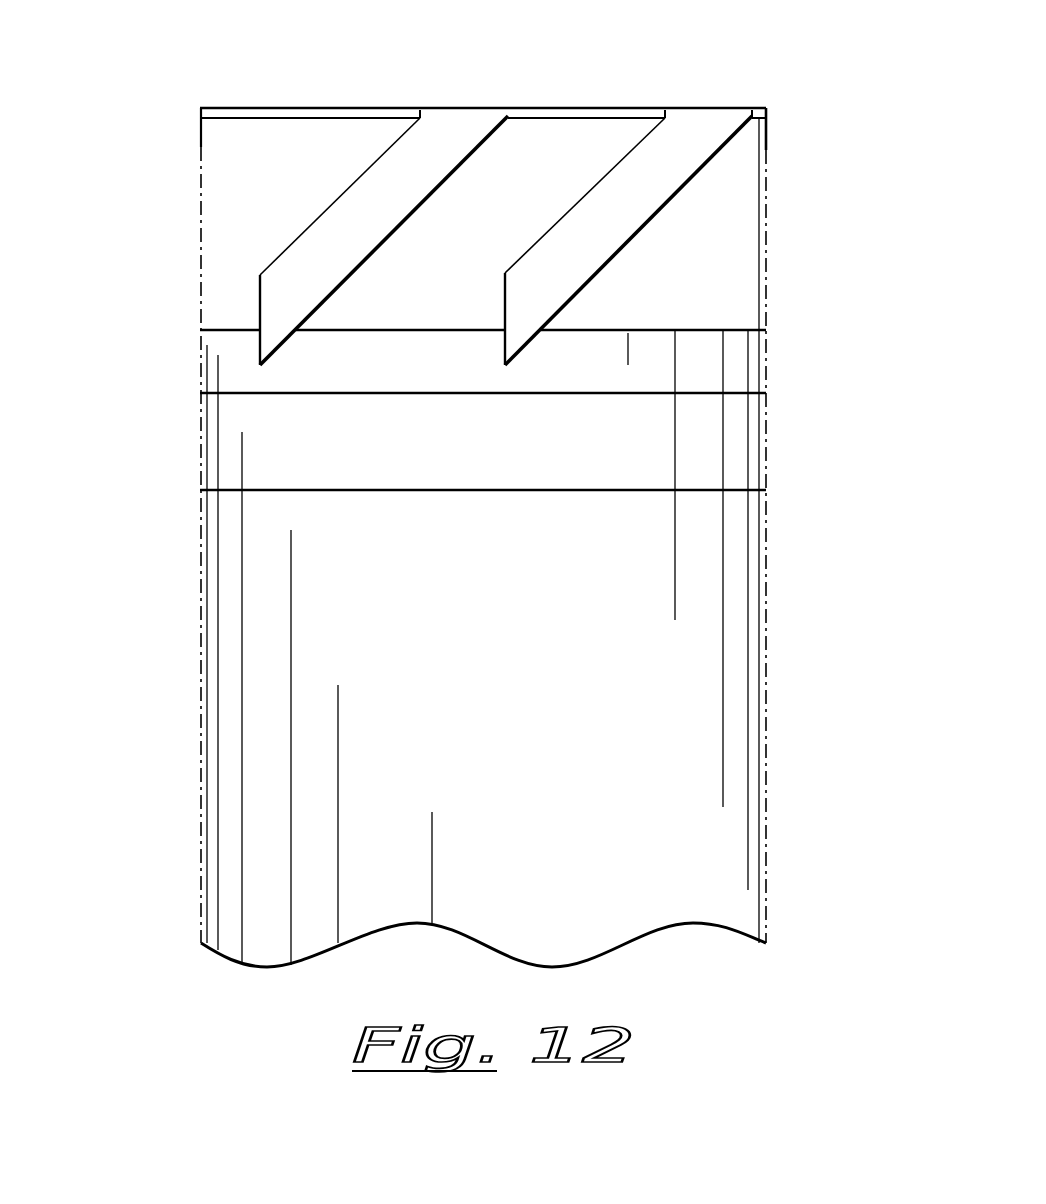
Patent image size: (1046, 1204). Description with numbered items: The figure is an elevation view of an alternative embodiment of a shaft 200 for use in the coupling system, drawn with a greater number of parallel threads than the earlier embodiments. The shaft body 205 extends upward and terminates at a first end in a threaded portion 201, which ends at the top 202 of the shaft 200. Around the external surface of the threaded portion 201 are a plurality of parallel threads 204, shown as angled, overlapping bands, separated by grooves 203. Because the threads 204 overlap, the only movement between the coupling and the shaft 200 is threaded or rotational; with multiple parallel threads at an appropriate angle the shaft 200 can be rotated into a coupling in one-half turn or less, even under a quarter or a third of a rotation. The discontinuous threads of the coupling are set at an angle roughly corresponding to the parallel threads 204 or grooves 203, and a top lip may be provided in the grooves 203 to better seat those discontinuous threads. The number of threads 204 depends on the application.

The shaft 200 is at (153, 522).
The threaded portion 201 is at (808, 489).
The top 202 is at (512, 108).
The grooves 203 is at (293, 180).
The threads 204 is at (400, 198).
The shaft body 205 is at (526, 673).